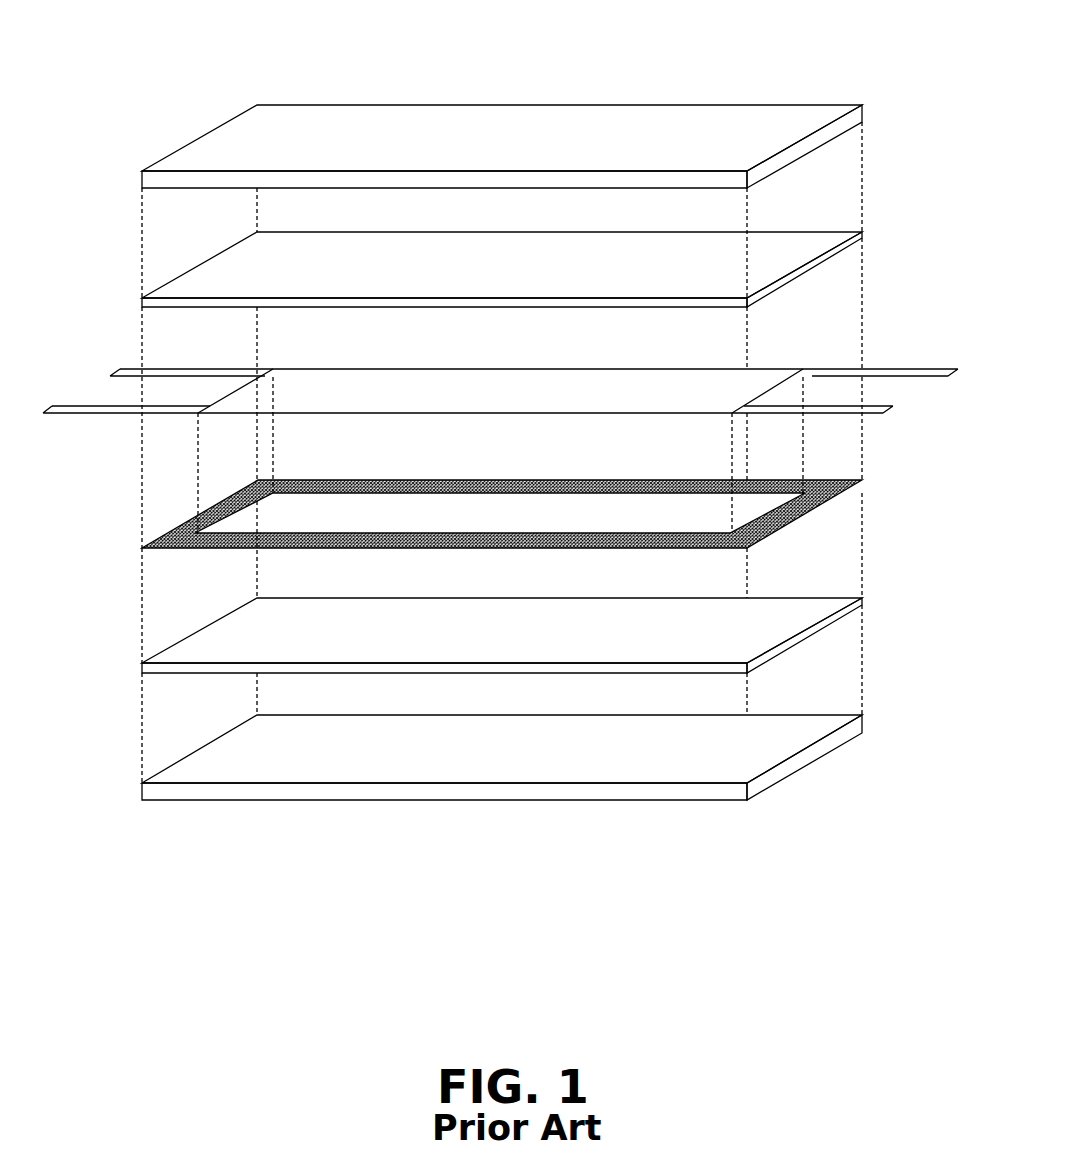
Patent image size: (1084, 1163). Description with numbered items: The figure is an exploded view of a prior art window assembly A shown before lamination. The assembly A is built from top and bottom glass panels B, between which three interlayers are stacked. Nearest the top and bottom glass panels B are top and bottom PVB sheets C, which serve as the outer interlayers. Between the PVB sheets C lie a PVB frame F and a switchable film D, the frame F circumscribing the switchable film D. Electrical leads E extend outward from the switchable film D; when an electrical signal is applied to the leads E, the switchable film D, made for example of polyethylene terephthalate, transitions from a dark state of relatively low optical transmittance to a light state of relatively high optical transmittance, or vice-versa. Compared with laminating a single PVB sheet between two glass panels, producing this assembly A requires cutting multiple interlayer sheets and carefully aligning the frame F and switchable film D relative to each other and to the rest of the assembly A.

The window assembly A is at (790, 27).
The glass panels B is at (187, 157).
The PVB sheets C is at (187, 292).
The switchable film D is at (360, 378).
The electrical leads E is at (98, 405).
The PVB frame F is at (173, 530).